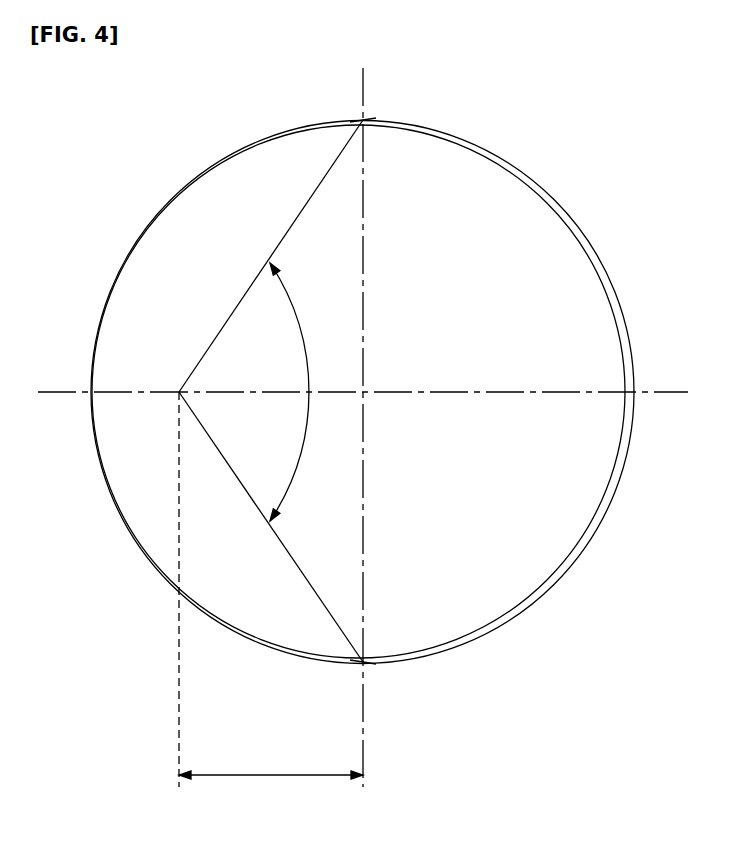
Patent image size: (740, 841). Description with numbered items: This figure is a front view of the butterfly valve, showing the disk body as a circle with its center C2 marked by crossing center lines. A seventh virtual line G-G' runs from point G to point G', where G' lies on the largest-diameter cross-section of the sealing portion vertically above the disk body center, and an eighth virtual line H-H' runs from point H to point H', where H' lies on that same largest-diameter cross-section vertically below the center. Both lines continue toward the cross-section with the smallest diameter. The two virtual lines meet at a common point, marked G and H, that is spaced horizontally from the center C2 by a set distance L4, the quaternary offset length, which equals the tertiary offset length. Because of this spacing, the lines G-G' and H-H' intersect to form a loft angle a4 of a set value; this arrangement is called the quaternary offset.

The center of circle / optical axis C2 is at (364, 393).
The start point of the seventh virtual line G is at (258, 391).
The start point of the eighth virtual line H is at (165, 589).
The end point of the seventh virtual line G' is at (375, 105).
The end point of the eighth virtual line H' is at (375, 679).
The loft angle a4 is at (300, 392).
The quaternary offset length L4 is at (271, 761).